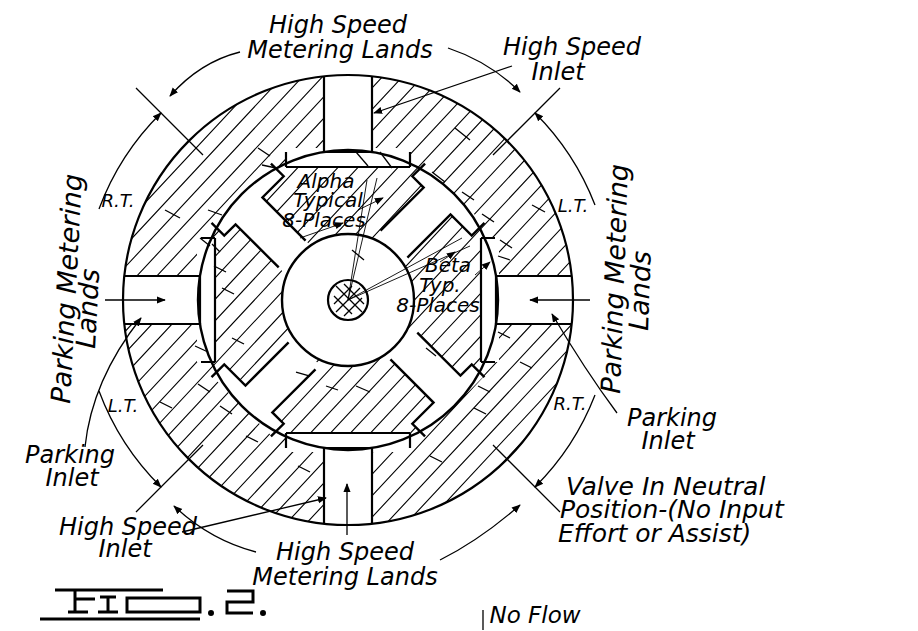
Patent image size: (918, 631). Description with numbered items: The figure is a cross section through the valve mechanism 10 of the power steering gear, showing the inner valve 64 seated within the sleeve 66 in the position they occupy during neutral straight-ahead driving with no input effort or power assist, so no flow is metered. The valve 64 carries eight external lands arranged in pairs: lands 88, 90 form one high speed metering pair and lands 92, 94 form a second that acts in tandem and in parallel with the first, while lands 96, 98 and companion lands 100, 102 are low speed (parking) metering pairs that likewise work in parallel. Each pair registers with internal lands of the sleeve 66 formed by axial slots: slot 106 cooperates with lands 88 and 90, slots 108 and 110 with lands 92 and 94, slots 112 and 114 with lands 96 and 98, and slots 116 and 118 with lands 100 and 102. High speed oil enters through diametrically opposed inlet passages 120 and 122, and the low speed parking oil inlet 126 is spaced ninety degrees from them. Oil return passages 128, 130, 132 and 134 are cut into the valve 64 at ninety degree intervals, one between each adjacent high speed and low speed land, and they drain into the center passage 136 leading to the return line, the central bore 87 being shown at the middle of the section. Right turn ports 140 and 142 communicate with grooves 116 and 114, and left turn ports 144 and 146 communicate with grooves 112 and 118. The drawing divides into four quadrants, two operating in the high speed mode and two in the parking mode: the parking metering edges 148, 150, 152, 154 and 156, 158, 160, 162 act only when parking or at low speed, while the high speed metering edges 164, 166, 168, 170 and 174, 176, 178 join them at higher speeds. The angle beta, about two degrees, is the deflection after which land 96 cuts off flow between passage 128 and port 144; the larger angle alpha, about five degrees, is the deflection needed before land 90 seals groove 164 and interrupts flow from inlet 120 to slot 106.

The valve assembly 10 is at (274, 110).
The valve 64 is at (232, 312).
The sleeve 66 is at (262, 150).
The spool center bore 87 is at (334, 320).
The valve land 88 is at (282, 148).
The valve land 90 is at (422, 146).
The valve land 92 is at (268, 450).
The valve land 94 is at (440, 440).
The low speed metering land 96 is at (486, 214).
The low speed metering land 98 is at (504, 336).
The low speed metering land 100 is at (202, 244).
The low speed metering land 102 is at (202, 386).
The axial slot 106 is at (466, 130).
The slot 108 is at (302, 470).
The slot 110 is at (438, 460).
The slot 112 is at (512, 246).
The slot 114 is at (486, 390).
The slot 116 is at (212, 212).
The slot 118 is at (196, 350).
The high speed oil inlet passage 120 is at (368, 90).
The high speed oil inlet passage 122 is at (378, 498).
The low speed parking oil inlet passage 126 is at (125, 276).
The oil return passage 128 is at (362, 256).
The oil return passage 130 is at (432, 354).
The oil return passage 132 is at (300, 374).
The oil return passage 134 is at (226, 292).
The center passage 136 is at (292, 306).
The right turn port 140 is at (170, 212).
The right turn port 142 is at (528, 368).
The left turn port 144 is at (538, 205).
The left turn port 146 is at (166, 404).
The metering edge 148 is at (470, 192).
The metering edge 150 is at (506, 258).
The metering edge 152 is at (500, 328).
The metering edge 154 is at (480, 412).
The metering edge 156 is at (224, 410).
The metering edge 158 is at (232, 340).
The metering edge 160 is at (220, 268).
The metering edge 162 is at (214, 246).
The high speed metering edge 164 is at (268, 166).
The high speed metering edge 166 is at (360, 152).
The high speed metering edge 168 is at (383, 152).
The high speed metering edge 170 is at (442, 172).
The high speed metering edge 174 is at (360, 390).
The high speed metering edge 176 is at (330, 388).
The high speed metering edge 178 is at (250, 440).